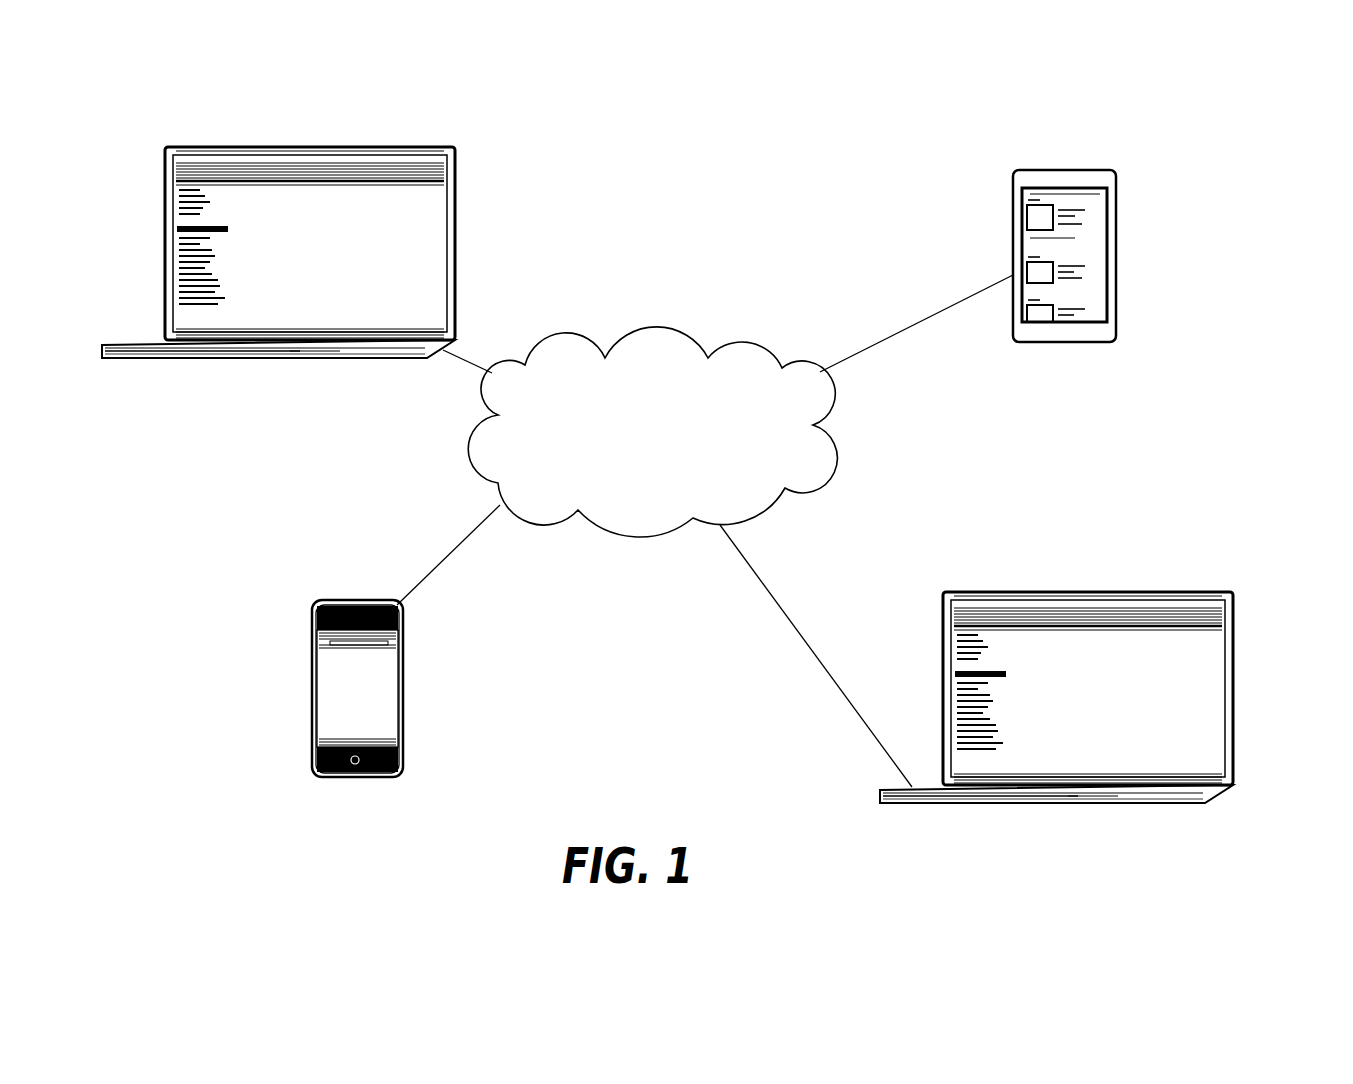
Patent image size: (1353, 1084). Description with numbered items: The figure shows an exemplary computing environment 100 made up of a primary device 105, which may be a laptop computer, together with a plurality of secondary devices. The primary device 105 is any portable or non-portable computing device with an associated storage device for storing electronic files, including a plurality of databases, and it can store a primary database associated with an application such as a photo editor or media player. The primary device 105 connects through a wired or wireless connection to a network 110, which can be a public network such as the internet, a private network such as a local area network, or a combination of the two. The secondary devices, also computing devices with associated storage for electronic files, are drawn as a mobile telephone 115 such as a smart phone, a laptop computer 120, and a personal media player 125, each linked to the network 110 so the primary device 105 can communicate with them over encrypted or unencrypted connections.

The computing environment 100 is at (648, 192).
The primary device 105 is at (165, 187).
The network 110 is at (692, 333).
The mobile telephone 115 is at (312, 660).
The laptop computer 120 is at (1230, 622).
The personal media player 125 is at (1117, 183).